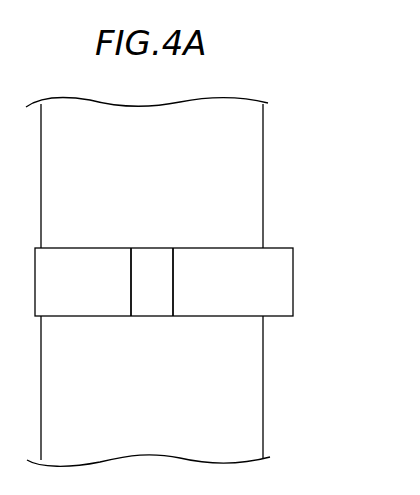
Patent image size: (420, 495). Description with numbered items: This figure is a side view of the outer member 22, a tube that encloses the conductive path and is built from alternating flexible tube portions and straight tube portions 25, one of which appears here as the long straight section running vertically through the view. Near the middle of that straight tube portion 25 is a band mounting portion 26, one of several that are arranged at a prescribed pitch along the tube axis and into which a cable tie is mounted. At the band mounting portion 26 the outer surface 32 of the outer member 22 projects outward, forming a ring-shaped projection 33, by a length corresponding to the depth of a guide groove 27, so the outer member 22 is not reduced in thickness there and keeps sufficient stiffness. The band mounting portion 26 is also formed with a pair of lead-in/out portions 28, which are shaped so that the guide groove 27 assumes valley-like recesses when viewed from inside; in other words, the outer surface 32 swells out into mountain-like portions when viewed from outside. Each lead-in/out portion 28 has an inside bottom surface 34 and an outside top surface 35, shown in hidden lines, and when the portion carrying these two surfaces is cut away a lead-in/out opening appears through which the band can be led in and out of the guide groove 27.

The outer member 22 is at (304, 149).
The straight tube portion 25 is at (251, 179).
The band mounting portion 26 is at (102, 248).
The guide groove 27 is at (202, 292).
The lead-in/out portion 28 is at (277, 247).
The outer surface 32 is at (247, 420).
The ring-shaped projection 33 is at (76, 305).
The inside bottom surface 34 is at (148, 262).
The outside top surface 35 is at (158, 262).